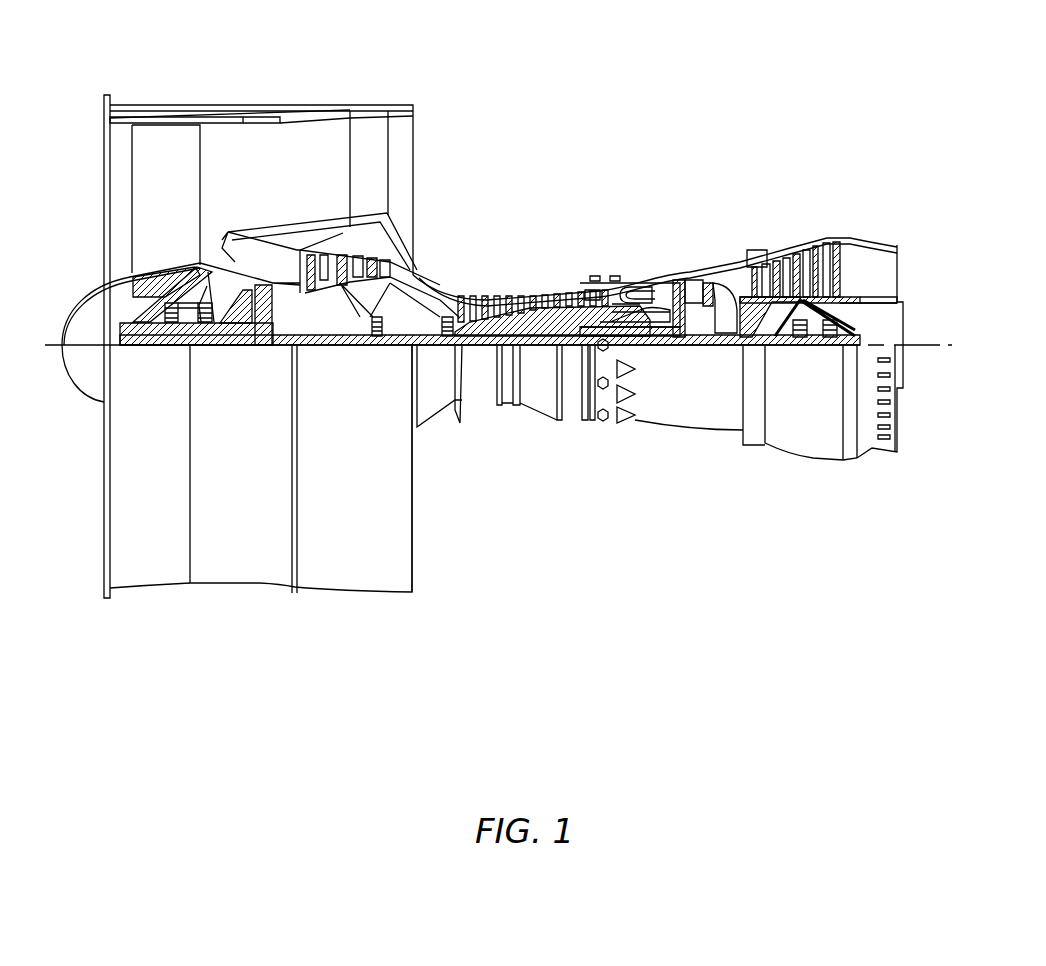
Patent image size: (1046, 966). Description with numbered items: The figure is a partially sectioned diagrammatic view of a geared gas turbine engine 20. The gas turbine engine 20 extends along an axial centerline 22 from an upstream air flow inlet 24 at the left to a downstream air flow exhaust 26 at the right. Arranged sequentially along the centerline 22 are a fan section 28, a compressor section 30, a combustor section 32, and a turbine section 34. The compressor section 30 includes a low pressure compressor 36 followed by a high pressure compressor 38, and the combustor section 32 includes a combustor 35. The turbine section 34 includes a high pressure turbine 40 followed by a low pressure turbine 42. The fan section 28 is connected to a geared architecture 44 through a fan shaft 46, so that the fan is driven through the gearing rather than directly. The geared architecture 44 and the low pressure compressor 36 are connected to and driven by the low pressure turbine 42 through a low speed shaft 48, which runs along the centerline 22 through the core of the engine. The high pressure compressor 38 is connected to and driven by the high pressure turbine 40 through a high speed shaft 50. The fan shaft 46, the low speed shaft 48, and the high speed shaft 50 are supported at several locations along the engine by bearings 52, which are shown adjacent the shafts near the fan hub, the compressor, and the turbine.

The geared gas turbine engine 20 is at (640, 110).
The axial centerline 22 is at (937, 346).
The upstream air flow inlet 24 is at (98, 167).
The downstream air flow exhaust 26 is at (917, 265).
The fan section 28 is at (235, 95).
The compressor section 30 is at (600, 193).
The combustor section 32 is at (638, 270).
The turbine section 34 is at (868, 173).
The combustor 35 is at (635, 295).
The low pressure compressor 36 is at (387, 250).
The high pressure compressor 38 is at (525, 277).
The high pressure turbine 40 is at (693, 270).
The low pressure turbine 42 is at (818, 233).
The geared architecture 44 is at (263, 340).
The fan shaft 46 is at (160, 340).
The low speed shaft 48 is at (680, 346).
The high speed shaft 50 is at (540, 323).
The bearings 52 is at (197, 323).